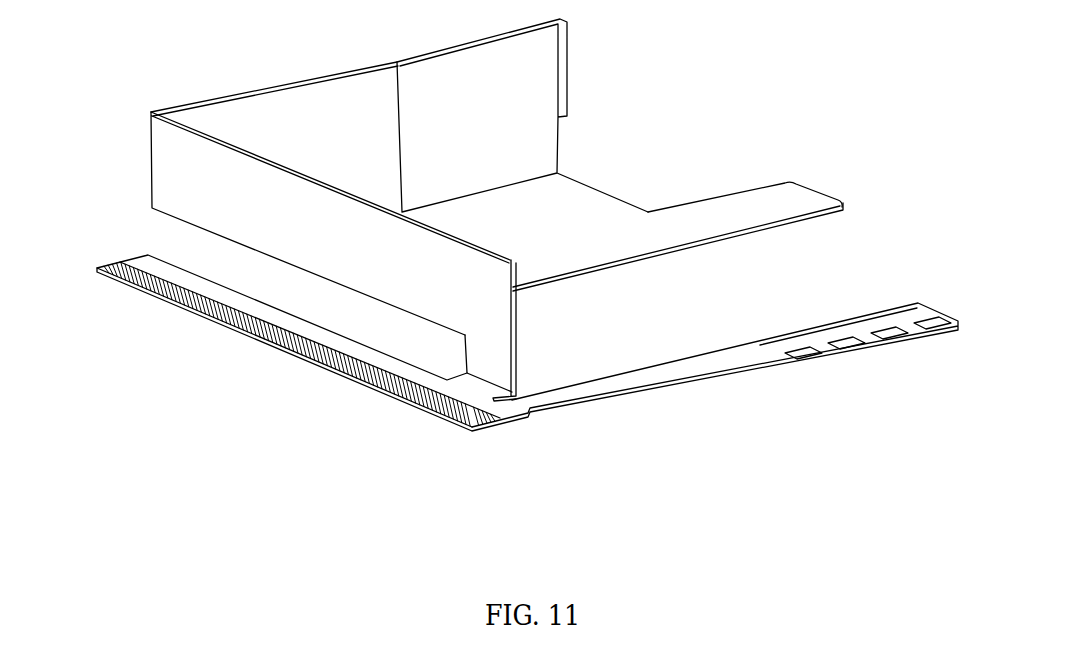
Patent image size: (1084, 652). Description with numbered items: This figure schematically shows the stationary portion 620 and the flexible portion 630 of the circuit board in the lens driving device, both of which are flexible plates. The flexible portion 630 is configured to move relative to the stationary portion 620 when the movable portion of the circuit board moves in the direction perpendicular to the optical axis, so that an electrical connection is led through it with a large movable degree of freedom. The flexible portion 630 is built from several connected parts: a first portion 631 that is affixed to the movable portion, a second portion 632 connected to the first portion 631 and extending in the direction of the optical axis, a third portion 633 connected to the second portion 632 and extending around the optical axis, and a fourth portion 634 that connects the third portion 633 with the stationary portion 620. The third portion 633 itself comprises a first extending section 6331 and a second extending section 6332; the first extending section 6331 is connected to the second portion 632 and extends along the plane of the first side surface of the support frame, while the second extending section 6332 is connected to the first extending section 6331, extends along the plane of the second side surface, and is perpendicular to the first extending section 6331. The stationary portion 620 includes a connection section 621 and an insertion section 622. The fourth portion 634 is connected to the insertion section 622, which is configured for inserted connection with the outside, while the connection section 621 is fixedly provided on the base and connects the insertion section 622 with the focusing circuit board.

The flexible portion 630 is at (452, 200).
The third portion 633 is at (449, 201).
The first extending section 6331 is at (313, 110).
The second extending section 6332 is at (185, 180).
The second portion 632 is at (480, 155).
The first portion 631 is at (570, 215).
The fourth portion 634 is at (483, 363).
The stationary portion 620 is at (527, 406).
The connection section 621 is at (592, 390).
The insertion section 622 is at (298, 366).